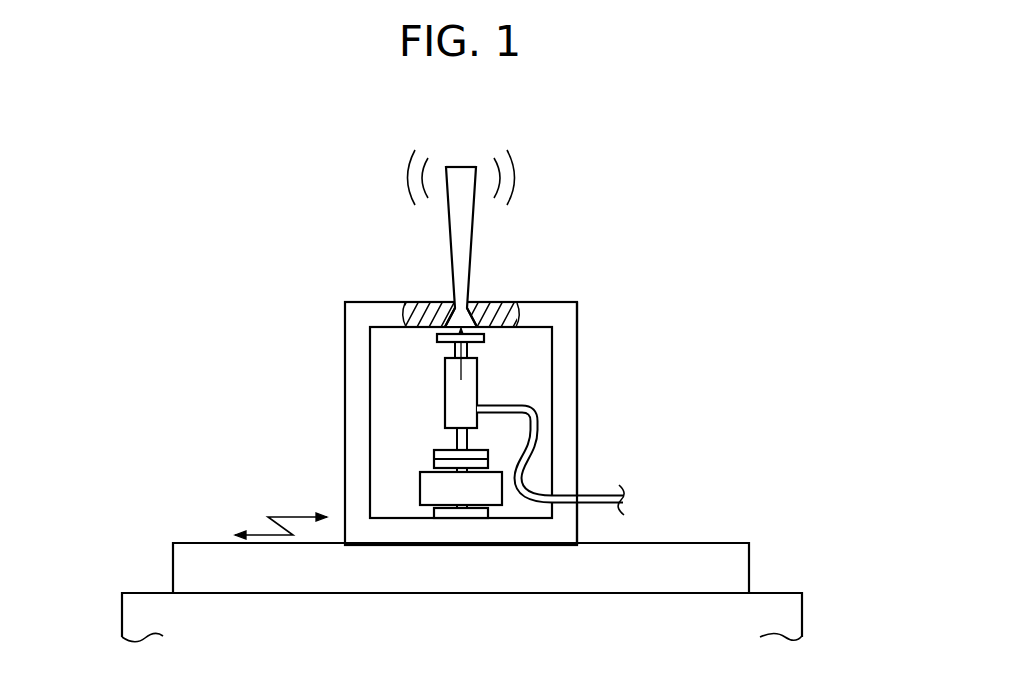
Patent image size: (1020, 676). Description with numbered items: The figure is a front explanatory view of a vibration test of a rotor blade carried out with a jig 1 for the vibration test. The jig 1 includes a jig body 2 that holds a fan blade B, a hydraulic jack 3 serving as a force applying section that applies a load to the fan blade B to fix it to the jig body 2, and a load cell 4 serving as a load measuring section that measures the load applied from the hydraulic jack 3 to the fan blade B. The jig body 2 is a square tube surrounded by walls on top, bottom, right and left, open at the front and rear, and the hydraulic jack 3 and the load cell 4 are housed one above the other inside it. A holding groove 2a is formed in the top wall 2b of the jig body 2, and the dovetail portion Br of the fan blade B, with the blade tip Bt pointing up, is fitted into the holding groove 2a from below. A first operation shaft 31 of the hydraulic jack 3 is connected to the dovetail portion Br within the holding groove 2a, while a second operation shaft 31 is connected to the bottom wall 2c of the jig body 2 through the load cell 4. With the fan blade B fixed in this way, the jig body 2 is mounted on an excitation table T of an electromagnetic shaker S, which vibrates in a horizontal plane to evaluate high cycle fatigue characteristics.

The jig 1 is at (657, 220).
The jig body 2 is at (345, 345).
The holding groove 2a is at (448, 303).
The top wall 2b is at (545, 316).
The bottom wall 2c is at (395, 530).
The hydraulic jack 3 is at (445, 387).
The operation shaft 31 is at (470, 345).
The load cell 4 is at (420, 488).
The fan blade B is at (447, 228).
The blade tip Bt is at (460, 167).
The dovetail portion Br is at (466, 318).
The electromagnetic shaker S is at (469, 631).
The excitation table T is at (623, 575).